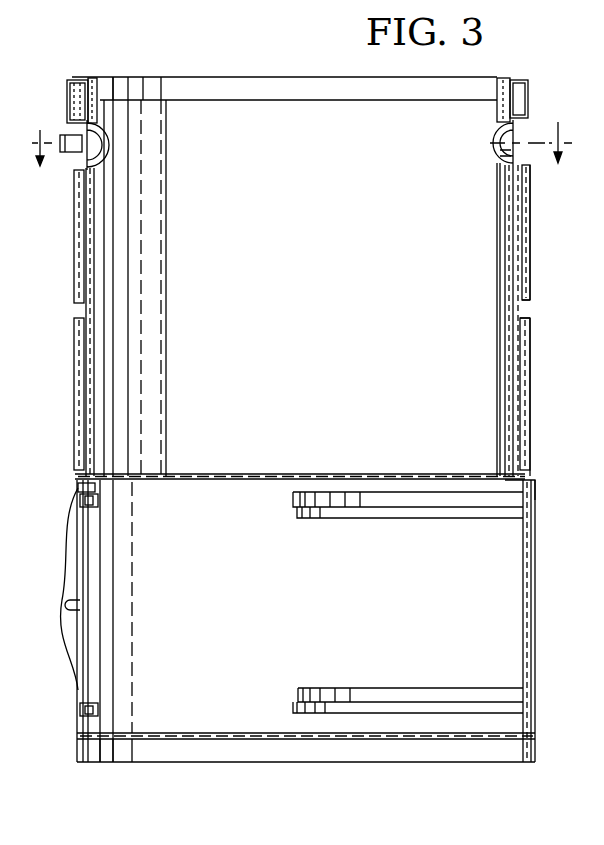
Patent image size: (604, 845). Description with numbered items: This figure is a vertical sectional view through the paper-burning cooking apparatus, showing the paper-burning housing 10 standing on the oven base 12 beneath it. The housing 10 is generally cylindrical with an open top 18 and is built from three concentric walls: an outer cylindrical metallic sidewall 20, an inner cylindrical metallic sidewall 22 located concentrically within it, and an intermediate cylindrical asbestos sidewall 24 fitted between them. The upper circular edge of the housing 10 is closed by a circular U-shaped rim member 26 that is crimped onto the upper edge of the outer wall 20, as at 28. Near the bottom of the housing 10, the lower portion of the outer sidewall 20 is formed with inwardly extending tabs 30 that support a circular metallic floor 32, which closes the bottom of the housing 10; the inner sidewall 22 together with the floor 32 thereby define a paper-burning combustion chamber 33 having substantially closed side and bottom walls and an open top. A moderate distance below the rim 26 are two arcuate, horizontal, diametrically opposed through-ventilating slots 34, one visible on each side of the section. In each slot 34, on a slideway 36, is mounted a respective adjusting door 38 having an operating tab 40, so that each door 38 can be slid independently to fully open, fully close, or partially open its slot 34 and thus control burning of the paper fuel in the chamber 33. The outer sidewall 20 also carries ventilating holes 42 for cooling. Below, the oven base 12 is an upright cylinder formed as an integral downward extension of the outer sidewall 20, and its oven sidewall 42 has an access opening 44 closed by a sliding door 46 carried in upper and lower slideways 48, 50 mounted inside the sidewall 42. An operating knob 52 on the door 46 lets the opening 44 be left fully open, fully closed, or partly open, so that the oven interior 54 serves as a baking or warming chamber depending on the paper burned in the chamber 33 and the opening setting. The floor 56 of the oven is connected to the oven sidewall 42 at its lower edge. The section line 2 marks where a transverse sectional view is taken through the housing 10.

The section line 2- 2 is at (302, 133).
The paper-burning housing 10 is at (538, 362).
The oven base 12 is at (542, 588).
The open top 18 is at (461, 112).
The outer cylindrical metallic sidewall 20 is at (530, 254).
The inner cylindrical metallic sidewall 22 is at (500, 244).
The intermediate cylindrical asbestos sidewall 24 is at (72, 268).
The circular U-shaped rim member 26 is at (90, 80).
The crimp 28 is at (528, 95).
The inwardly extending tabs 30 is at (97, 486).
The circular metallic floor 32 is at (273, 476).
The paper-burning combustion chamber 33 is at (298, 281).
The through-ventilating slots 34 is at (88, 158).
The slideway 36 is at (90, 200).
The adjusting doors 38 is at (100, 135).
The operating tab 40 is at (62, 134).
The ventilating holes / oven sidewall 42 is at (530, 310).
The access opening 44 is at (64, 560).
The sliding door 46 is at (90, 568).
The upper slideway 48 is at (98, 505).
The lower slideway 50 is at (98, 710).
The operating knob 52 is at (82, 612).
The oven interior 54 is at (341, 609).
The oven floor 56 is at (242, 740).